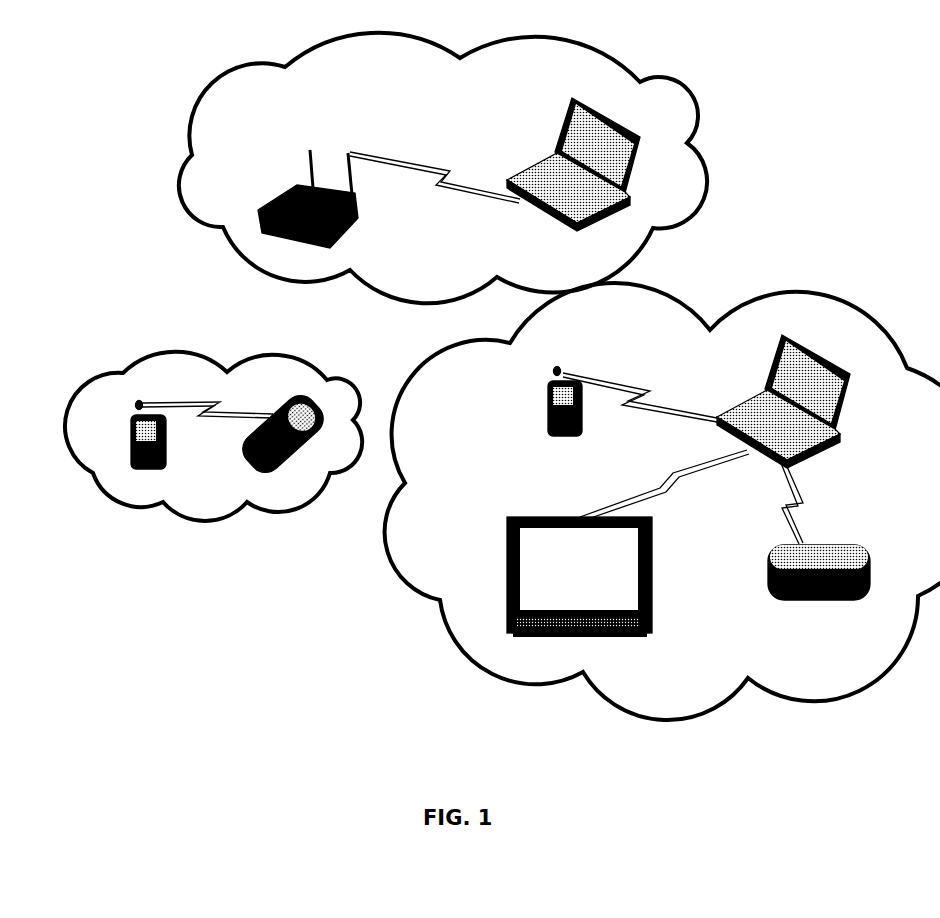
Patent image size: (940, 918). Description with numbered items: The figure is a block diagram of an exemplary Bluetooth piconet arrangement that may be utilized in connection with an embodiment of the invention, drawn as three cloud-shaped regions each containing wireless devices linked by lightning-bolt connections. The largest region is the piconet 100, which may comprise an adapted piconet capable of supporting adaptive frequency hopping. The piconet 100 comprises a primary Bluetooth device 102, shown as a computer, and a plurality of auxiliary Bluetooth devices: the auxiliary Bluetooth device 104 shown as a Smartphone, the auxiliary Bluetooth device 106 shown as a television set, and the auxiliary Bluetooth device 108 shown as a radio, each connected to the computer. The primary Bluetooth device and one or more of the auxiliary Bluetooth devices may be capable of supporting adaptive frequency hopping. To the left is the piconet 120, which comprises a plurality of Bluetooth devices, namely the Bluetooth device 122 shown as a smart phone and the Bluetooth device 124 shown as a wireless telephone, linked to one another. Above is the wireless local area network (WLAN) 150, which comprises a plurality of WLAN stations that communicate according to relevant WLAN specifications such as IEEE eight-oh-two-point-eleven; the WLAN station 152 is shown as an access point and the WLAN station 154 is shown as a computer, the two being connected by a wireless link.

The piconet 100 is at (833, 292).
The primary Bluetooth device 102 is at (845, 357).
The auxiliary Bluetooth device 104 is at (550, 390).
The auxiliary Bluetooth device 106 is at (512, 517).
The auxiliary Bluetooth device 108 is at (860, 555).
The piconet 120 is at (317, 358).
The Bluetooth device 122 is at (130, 423).
The Bluetooth device 124 is at (248, 437).
The wireless local area network (WLAN) 150 is at (658, 73).
The WLAN station 152 is at (288, 183).
The WLAN station 154 is at (625, 125).